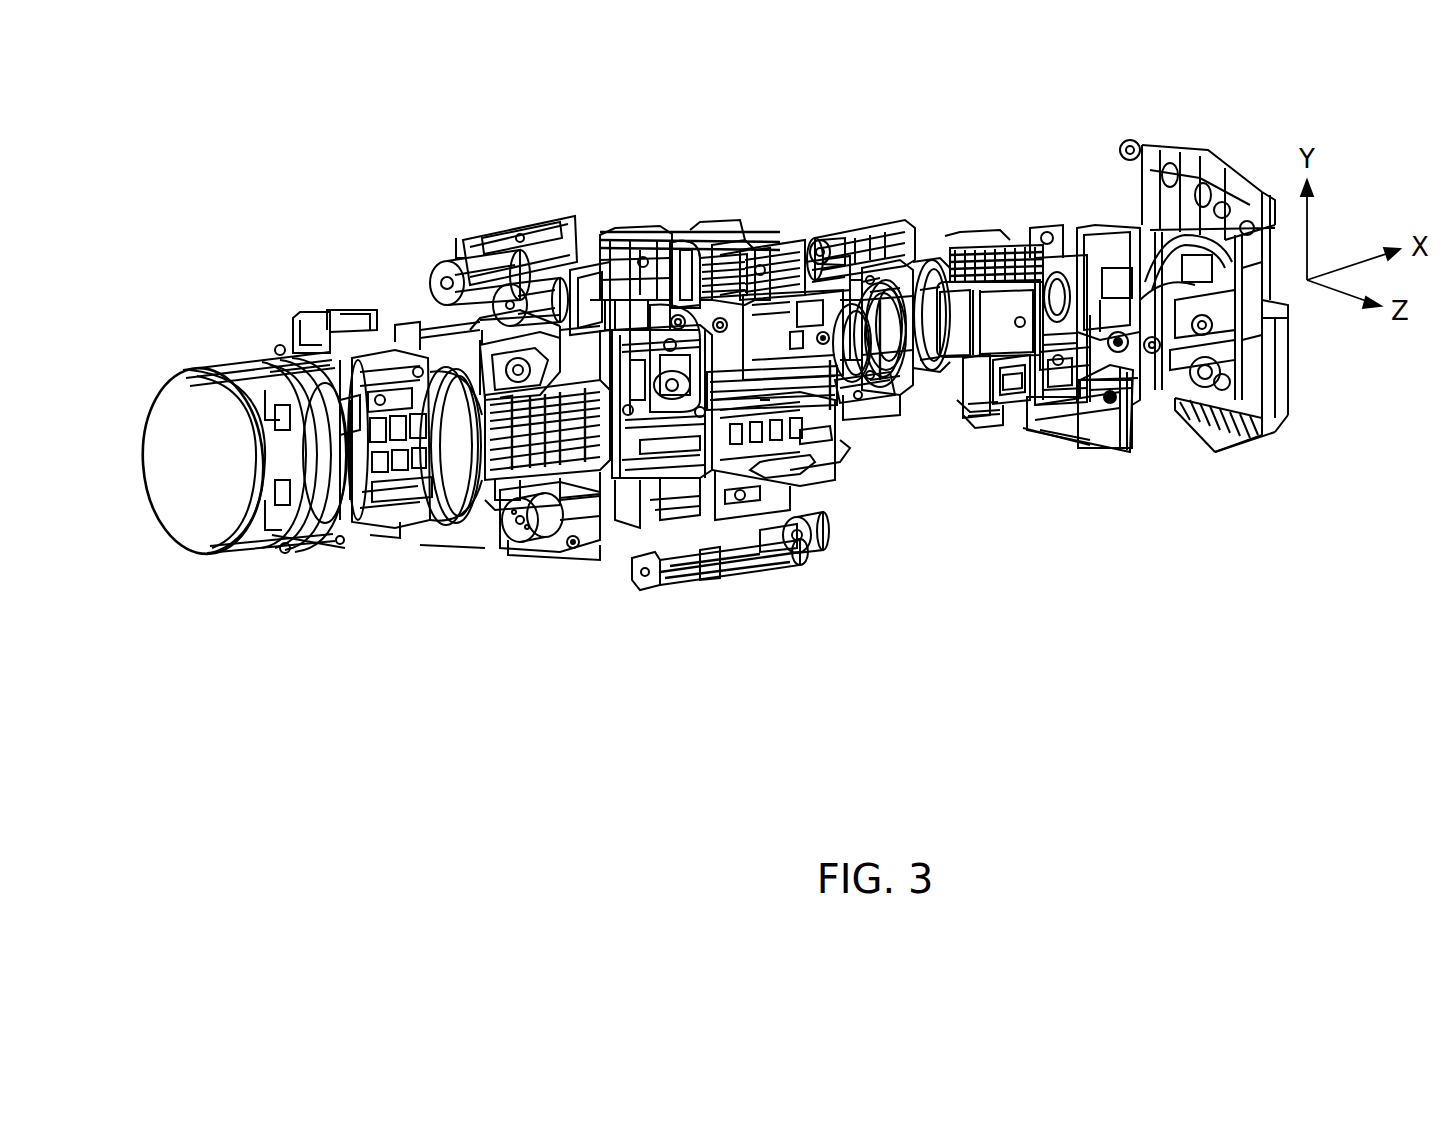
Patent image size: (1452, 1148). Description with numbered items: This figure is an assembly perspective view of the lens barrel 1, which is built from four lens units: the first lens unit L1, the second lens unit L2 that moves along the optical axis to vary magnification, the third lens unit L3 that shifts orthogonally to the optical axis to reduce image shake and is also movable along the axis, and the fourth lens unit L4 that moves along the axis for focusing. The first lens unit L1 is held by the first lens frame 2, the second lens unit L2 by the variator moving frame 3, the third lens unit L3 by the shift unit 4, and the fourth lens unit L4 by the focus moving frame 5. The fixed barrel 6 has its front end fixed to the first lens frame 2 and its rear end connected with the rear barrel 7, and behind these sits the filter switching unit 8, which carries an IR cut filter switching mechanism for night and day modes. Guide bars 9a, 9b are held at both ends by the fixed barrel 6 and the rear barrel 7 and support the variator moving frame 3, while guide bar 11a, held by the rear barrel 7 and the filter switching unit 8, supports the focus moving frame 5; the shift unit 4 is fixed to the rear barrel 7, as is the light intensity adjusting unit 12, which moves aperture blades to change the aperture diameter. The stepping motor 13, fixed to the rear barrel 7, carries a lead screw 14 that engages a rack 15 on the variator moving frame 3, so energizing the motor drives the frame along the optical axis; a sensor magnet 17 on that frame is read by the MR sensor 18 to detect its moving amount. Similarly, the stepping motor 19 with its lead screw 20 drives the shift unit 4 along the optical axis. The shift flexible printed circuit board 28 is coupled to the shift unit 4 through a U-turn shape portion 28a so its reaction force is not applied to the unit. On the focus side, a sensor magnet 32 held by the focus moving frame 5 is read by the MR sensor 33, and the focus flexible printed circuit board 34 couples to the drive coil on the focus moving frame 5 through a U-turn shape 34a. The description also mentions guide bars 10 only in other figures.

The lens barrel 1 is at (1345, 500).
The first lens unit L1 is at (207, 453).
The first lens frame 2 is at (283, 540).
The fixed barrel 6 is at (377, 537).
The second lens unit L2 is at (457, 490).
The variator moving frame 3 is at (483, 483).
The rack 15 is at (573, 550).
The sensor magnet 17 is at (505, 395).
The stepping motor 19 is at (475, 242).
The lead screw 20 is at (517, 257).
The light intensity adjusting unit 12 is at (577, 277).
The guide bar 9a is at (657, 483).
The guide bar 9b is at (640, 378).
The lead screw 14 is at (737, 540).
The stepping motor 13 is at (800, 510).
The rear barrel 7 is at (787, 470).
The U-turn shape portion 28a is at (837, 440).
The shift flexible printed circuit board 28 is at (890, 398).
The third lens unit L3 is at (940, 417).
The U-turn shape 34a is at (983, 427).
The focus flexible printed circuit board 34 is at (1020, 427).
The filter switching unit 8 is at (1113, 463).
The sensor magnet 32 is at (1018, 240).
The fourth lens unit L4 is at (970, 267).
The focus moving frame 5 is at (927, 273).
The shift unit 4 is at (930, 250).
The guide bar 11a is at (858, 283).
The MR sensor 33 is at (837, 243).
The flexible printed board 10 is at (780, 260).
The MR sensor 18 is at (757, 248).